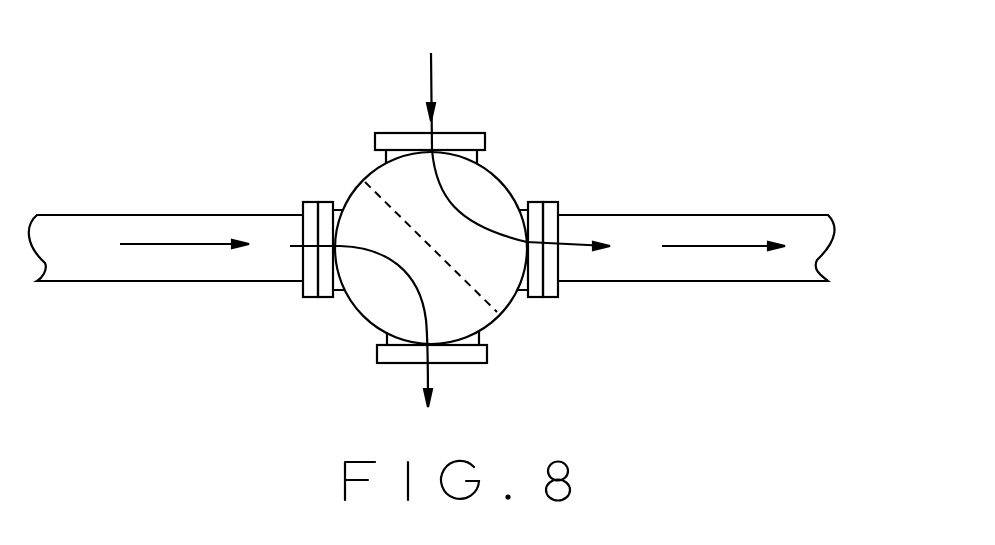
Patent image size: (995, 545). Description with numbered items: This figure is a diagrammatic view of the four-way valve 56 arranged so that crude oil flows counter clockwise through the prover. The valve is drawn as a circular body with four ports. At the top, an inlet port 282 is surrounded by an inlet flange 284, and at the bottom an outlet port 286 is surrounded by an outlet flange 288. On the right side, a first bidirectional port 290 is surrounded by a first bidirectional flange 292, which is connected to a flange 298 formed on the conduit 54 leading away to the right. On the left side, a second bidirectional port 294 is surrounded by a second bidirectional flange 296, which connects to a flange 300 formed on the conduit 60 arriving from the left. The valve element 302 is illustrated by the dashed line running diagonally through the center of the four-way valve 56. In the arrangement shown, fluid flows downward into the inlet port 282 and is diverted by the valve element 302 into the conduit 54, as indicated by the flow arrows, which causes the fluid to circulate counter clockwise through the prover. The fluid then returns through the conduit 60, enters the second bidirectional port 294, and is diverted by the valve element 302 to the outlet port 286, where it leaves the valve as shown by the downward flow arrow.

The conduit 54 is at (733, 215).
The 4-way valve 56 is at (454, 227).
The conduit 60 is at (143, 215).
The inlet port 282 is at (453, 170).
The inlet flange 284 is at (375, 140).
The outlet port 286 is at (452, 325).
The outlet flange 288 is at (488, 352).
The first bidirectional port 290 is at (534, 202).
The first bidirectional flange 292 is at (550, 202).
The second bidirectional port 294 is at (357, 222).
The second bidirectional flange 296 is at (323, 202).
The flange 298 is at (558, 297).
The flange 300 is at (309, 297).
The valve element 302 is at (473, 290).